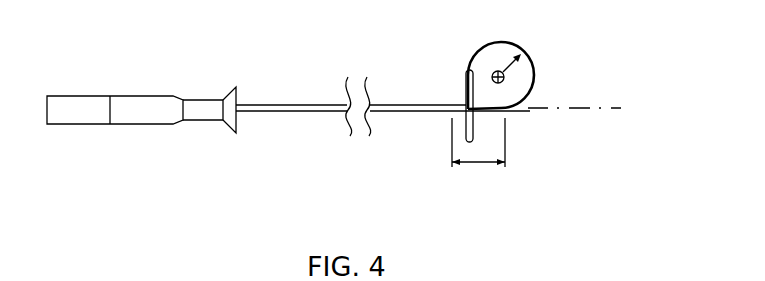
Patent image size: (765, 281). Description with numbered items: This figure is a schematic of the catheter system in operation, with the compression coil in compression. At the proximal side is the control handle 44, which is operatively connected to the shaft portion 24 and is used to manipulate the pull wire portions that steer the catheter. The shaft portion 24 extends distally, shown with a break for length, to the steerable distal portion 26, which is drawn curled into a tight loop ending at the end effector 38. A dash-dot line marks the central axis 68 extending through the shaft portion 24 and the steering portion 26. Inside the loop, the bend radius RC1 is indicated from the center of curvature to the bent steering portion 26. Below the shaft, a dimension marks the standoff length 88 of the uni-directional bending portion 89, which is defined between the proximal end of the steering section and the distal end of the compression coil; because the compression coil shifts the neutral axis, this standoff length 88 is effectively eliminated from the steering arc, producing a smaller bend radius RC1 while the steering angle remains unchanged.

The control handle 44 is at (70, 90).
The shaft portion 24 is at (258, 103).
The steerable distal portion 26 is at (493, 42).
The end effector 38 is at (466, 102).
The bend radius RC1 is at (506, 73).
The central axis 68 is at (583, 106).
The standoff length 88 is at (500, 161).
The uni-directional bending portion 89 is at (477, 162).